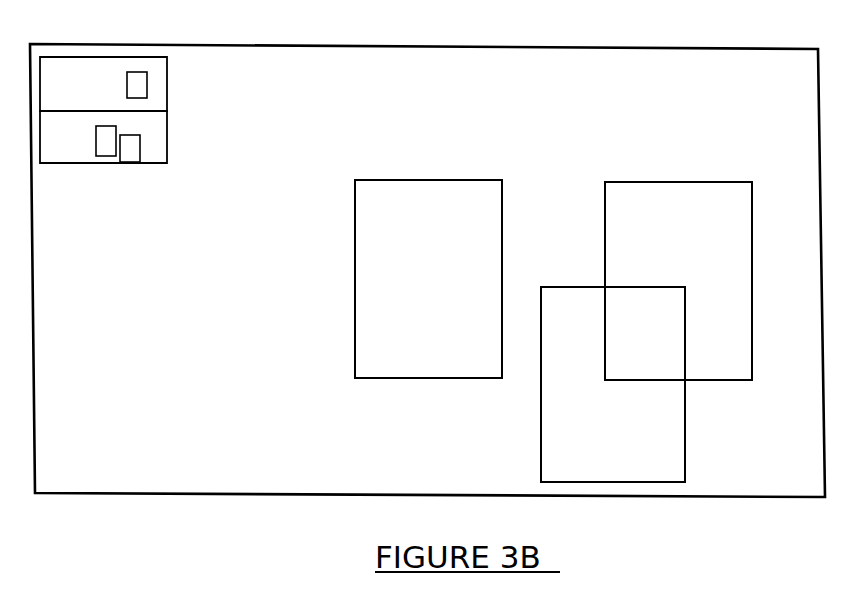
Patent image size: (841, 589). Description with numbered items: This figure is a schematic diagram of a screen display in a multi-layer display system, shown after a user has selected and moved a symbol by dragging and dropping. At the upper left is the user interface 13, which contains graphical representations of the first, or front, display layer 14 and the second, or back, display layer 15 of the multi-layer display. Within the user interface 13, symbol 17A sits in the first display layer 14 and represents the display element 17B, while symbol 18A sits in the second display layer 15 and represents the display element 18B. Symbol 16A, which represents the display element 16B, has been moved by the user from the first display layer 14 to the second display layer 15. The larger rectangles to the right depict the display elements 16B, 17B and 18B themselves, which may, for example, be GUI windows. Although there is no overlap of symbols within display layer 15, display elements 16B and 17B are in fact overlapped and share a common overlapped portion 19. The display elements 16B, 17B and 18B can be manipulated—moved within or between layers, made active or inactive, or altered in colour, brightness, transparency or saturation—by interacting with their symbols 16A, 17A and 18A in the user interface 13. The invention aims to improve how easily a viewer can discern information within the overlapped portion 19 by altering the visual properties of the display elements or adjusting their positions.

The user interface 13 is at (138, 206).
The first display layer 14 is at (167, 72).
The second display layer 15 is at (167, 155).
The symbol 16A is at (140, 152).
The display element 16B is at (541, 418).
The symbol 17A is at (100, 151).
The display element 17B is at (392, 180).
The symbol 18A is at (136, 72).
The display element 18B is at (687, 182).
The overlapped portion 19 is at (627, 313).